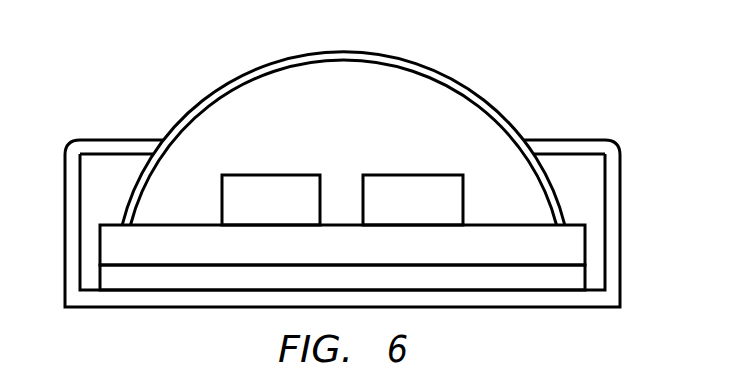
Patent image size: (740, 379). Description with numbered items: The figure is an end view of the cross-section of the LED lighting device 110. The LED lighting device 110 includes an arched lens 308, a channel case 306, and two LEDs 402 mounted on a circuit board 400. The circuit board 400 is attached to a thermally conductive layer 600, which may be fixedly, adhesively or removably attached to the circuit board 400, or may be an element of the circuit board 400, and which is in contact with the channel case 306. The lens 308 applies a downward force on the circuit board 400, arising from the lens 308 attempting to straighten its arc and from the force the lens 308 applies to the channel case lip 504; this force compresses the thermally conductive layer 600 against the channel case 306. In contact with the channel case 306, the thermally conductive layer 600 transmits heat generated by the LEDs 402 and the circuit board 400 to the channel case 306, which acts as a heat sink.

The LED lighting device 110 is at (158, 59).
The channel case 306 is at (621, 190).
The lens 308 is at (430, 68).
The circuit board 400 is at (565, 245).
The LEDs 402 is at (267, 173).
The channel case lip 504 is at (105, 137).
The thermally conductive layer 600 is at (493, 280).